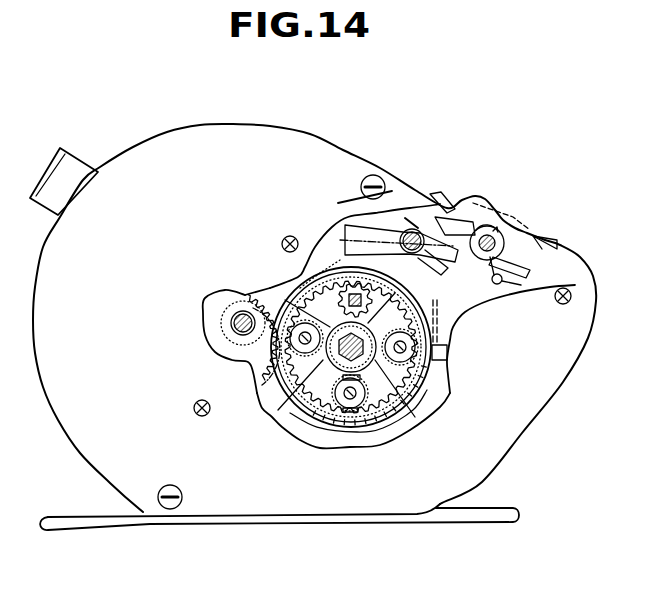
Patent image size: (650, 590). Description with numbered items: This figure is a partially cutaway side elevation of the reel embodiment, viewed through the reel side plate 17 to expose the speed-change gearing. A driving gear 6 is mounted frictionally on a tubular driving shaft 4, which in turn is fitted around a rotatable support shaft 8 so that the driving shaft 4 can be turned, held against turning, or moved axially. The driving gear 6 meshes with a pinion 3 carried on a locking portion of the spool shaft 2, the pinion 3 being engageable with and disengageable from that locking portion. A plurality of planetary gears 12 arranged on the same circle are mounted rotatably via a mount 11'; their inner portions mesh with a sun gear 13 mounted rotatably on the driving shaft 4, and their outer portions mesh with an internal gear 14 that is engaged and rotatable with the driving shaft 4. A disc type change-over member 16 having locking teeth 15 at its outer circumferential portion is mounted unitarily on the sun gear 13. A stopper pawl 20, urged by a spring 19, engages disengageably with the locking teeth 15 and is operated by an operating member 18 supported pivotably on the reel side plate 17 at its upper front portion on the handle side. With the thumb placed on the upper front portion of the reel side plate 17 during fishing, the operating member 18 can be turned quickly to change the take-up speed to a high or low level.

The spool shaft 2 is at (232, 323).
The pinion 3 is at (253, 363).
The driving shaft 4 is at (382, 398).
The driving gear 6 is at (275, 285).
The support shaft 8 is at (305, 390).
The mount 11' is at (499, 339).
The planetary gears 12 is at (345, 300).
The sun gear 13 is at (298, 287).
The internal gear 14 is at (322, 312).
The locking teeth 15 is at (447, 352).
The change-over member 16 is at (368, 432).
The reel side plate 17 is at (258, 134).
The operating member 18 is at (481, 201).
The spring 19 is at (400, 238).
The stopper pawl 20 is at (365, 300).